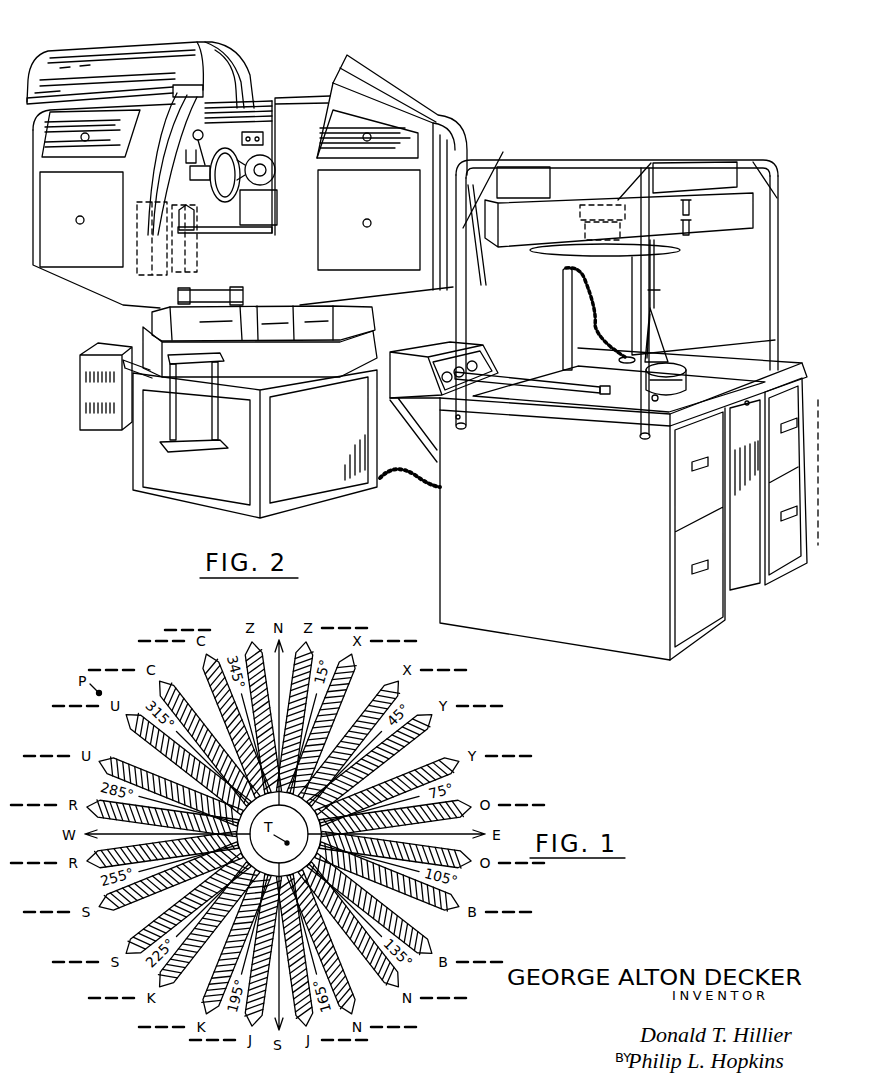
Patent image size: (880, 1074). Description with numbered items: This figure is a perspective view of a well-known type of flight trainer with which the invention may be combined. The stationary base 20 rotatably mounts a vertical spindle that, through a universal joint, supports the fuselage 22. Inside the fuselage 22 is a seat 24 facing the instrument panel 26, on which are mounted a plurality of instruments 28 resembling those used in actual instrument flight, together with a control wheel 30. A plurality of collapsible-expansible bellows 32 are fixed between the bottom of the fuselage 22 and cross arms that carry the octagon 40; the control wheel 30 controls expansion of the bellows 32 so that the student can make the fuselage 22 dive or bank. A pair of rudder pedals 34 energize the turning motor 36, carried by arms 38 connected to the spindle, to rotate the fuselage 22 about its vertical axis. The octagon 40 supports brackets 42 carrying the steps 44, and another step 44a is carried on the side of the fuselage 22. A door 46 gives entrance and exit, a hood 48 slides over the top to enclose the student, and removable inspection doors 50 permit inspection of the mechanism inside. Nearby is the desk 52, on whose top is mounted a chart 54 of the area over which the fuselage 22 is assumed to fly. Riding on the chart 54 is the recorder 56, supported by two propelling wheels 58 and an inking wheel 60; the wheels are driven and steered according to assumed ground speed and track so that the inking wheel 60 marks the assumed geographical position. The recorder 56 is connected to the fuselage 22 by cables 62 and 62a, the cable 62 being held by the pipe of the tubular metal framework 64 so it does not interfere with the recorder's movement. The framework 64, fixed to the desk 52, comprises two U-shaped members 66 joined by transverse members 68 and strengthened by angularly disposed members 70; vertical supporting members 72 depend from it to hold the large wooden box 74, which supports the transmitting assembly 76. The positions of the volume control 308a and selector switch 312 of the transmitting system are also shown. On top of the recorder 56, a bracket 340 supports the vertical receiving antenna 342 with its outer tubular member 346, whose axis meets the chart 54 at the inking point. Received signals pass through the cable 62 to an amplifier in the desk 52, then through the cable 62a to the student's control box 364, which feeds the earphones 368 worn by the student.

The stationary base 20 is at (178, 488).
The fuselage 22 is at (412, 106).
The seat 24 is at (252, 228).
The instrument panel 26 is at (190, 160).
The instruments 28 is at (200, 129).
The control wheel 30 is at (220, 208).
The bellows 32 is at (304, 315).
The rudder pedals 34 is at (163, 276).
The turning motor 36 is at (102, 420).
The arms 38 is at (134, 370).
The octagon 40 is at (318, 378).
The brackets 42 is at (227, 360).
The steps 44 is at (188, 438).
The step 44a is at (210, 292).
The door 46 is at (170, 133).
The hood 48 is at (135, 48).
The inspection doors 50 is at (123, 172).
The desk 52 is at (601, 640).
The chart 54 is at (722, 370).
The recorder 56 is at (697, 356).
The propelling wheels 58 is at (612, 396).
The inking wheel 60 is at (660, 398).
The cable 62 is at (588, 280).
The cable 62a is at (413, 480).
The tubular metal framework 64 is at (682, 149).
The U-shaped members 66 is at (649, 275).
The transverse members 68 is at (570, 160).
The angularly disposed members 70 is at (478, 163).
The vertical supporting members 72 is at (556, 180).
The wooden box 74 is at (513, 240).
The transmitting assembly 76 is at (581, 229).
The volume control 308a is at (690, 227).
The selector switch 312 is at (690, 208).
The bracket 340 is at (647, 325).
The receiving antenna 342 is at (670, 300).
The outer tubular member 346 is at (658, 290).
The student's control box 364 is at (268, 140).
The earphones 368 is at (268, 171).